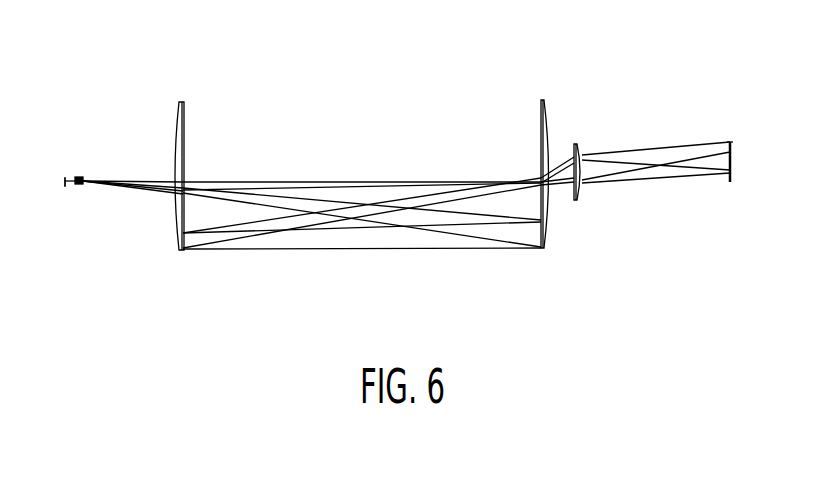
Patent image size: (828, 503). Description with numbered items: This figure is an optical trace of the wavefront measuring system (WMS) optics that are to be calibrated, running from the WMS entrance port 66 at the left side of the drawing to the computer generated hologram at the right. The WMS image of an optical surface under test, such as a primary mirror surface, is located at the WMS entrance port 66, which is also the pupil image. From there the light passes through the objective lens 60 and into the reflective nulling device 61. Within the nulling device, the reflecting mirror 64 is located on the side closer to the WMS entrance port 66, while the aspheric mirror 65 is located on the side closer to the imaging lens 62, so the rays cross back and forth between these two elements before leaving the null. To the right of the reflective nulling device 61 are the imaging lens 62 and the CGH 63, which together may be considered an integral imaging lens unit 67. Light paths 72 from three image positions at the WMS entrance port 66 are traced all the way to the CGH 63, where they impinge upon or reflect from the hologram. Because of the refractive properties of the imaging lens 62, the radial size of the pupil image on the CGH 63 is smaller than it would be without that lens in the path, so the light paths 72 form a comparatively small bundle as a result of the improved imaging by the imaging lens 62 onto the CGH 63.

The objective lens 60 is at (77, 166).
The reflective nulling device 61 is at (185, 90).
The imaging lens 62 is at (582, 139).
The CGH 63 is at (727, 138).
The reflecting mirror 64 is at (186, 155).
The aspheric mirror 65 is at (549, 246).
The WMS entrance port 66 is at (70, 196).
The imaging lens unit 67 is at (738, 185).
The light paths 72 is at (649, 150).